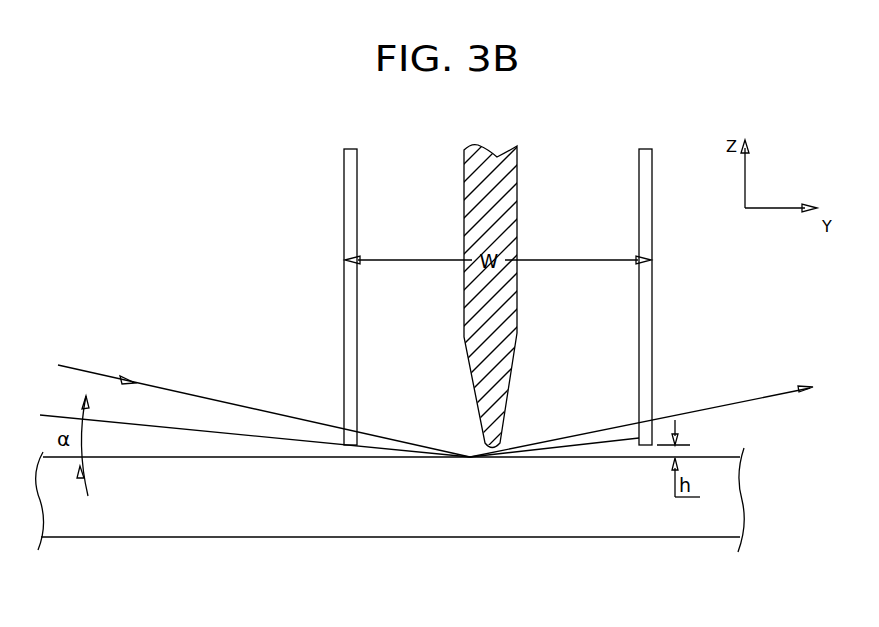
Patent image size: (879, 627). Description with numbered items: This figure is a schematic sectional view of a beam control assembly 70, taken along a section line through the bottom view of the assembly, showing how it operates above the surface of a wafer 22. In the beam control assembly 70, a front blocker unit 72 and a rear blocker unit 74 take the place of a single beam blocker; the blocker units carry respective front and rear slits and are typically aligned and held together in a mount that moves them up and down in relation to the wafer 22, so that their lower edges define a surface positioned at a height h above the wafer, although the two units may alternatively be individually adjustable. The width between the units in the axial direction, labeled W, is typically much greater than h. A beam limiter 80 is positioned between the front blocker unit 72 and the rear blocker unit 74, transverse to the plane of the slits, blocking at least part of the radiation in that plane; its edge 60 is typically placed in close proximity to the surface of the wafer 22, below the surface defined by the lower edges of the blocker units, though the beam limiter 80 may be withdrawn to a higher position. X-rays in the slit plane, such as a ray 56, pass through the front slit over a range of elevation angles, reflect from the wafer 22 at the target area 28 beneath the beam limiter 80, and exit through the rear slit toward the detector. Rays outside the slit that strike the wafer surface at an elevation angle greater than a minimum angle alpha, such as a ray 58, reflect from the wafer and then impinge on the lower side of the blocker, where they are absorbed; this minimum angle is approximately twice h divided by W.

The beam control assembly 70 is at (255, 188).
The front blocker unit 72 is at (344, 330).
The rear blocker unit 74 is at (652, 297).
The beam limiter 80 is at (510, 381).
The edge of the beam limiter 60 is at (484, 440).
The ray 56 is at (216, 402).
The ray 58 is at (190, 430).
The target area 28 is at (491, 460).
The wafer 22 is at (727, 500).